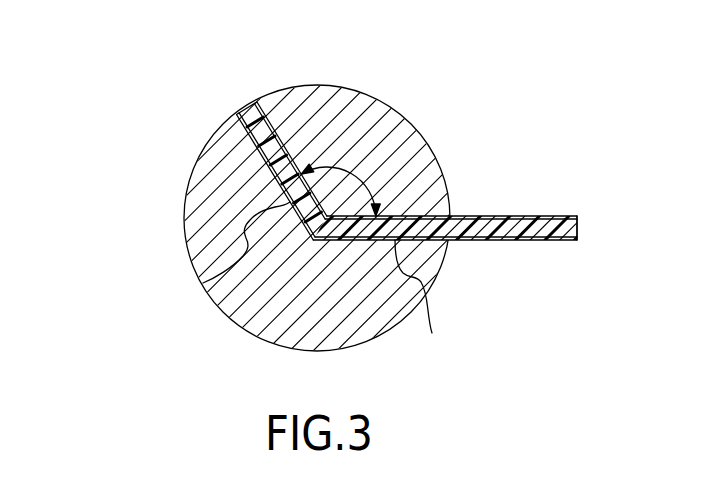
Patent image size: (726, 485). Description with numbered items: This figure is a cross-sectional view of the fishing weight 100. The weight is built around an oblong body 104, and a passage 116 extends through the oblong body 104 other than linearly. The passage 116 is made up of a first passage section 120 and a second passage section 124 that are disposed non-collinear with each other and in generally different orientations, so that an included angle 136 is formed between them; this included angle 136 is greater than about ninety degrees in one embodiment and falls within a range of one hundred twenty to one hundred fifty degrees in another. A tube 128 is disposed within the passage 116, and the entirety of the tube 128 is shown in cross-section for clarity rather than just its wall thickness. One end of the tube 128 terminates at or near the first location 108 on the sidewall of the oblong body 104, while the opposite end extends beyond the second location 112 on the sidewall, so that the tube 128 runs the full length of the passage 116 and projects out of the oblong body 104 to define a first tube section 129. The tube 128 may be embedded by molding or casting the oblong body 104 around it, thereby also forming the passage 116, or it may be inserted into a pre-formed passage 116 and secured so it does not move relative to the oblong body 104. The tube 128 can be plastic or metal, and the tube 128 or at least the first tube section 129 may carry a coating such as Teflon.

The fishing weight 100 is at (537, 135).
The oblong body 104 is at (212, 179).
The first location 108 is at (250, 107).
The second location 112 is at (452, 242).
The passage 116 is at (305, 151).
The first passage section 120 is at (203, 283).
The second passage section 124 is at (422, 297).
The tube 128 is at (540, 203).
The first tube section 129 is at (513, 240).
The included angle 136 is at (370, 173).